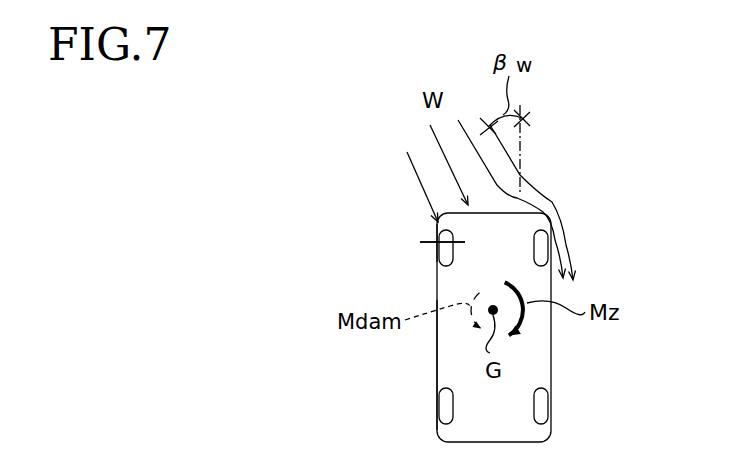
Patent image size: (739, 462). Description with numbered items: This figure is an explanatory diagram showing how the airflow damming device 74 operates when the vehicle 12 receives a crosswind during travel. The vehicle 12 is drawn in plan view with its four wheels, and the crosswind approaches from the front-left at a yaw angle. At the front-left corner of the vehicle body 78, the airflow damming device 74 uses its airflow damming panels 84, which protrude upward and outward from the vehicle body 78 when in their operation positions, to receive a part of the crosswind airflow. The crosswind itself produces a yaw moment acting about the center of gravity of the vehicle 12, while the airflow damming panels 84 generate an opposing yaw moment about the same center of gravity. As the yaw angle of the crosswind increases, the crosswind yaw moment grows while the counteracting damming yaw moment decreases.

The vehicle 12 is at (551, 368).
The airflow damming device 74 is at (418, 233).
The airflow damming panels 84 is at (433, 243).
The vehicle body 78 is at (437, 375).